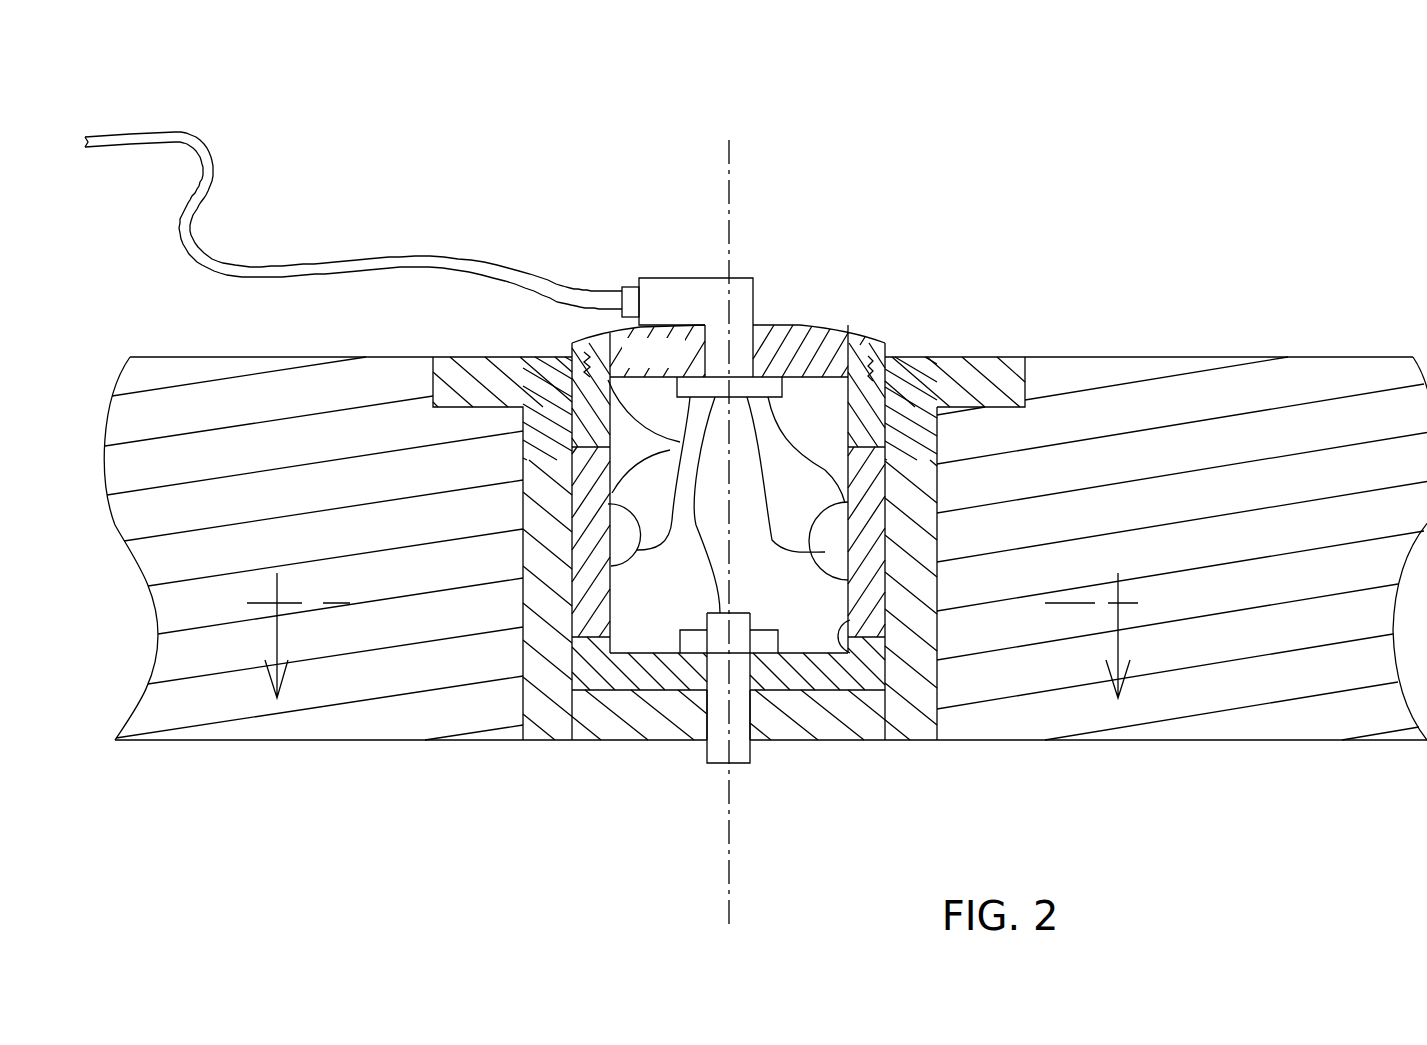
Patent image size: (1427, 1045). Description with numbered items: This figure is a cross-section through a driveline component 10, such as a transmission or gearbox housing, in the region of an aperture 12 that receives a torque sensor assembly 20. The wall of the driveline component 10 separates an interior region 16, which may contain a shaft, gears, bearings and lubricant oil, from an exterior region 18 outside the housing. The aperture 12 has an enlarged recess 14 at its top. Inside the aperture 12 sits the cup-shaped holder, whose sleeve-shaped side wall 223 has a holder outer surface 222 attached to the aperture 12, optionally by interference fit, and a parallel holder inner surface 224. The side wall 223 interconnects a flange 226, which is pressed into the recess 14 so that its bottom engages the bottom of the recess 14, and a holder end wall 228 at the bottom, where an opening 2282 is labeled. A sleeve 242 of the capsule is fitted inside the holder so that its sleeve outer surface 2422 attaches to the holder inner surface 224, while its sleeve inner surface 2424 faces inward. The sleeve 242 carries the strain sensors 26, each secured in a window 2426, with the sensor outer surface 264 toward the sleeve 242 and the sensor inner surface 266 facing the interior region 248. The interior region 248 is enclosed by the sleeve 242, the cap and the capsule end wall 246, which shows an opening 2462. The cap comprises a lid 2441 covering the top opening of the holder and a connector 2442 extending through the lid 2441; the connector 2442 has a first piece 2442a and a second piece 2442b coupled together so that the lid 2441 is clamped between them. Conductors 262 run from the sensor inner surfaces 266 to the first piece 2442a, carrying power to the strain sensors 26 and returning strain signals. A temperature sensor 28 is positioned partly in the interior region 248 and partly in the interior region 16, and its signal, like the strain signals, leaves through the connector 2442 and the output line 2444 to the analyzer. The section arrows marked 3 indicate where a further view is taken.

The driveline component 10 is at (1355, 532).
The aperture 12 is at (1010, 362).
The recess 14 is at (993, 405).
The interior region 16 is at (1218, 869).
The exterior region 18 is at (1218, 254).
The torque sensor assembly 20 is at (674, 222).
The strain sensor 26 is at (865, 530).
The temperature sensor 28 is at (740, 763).
The holder outer surface 222 is at (520, 687).
The side wall 223 is at (548, 588).
The holder inner surface 224 is at (588, 495).
The flange 226 is at (993, 357).
The holder end wall 228 is at (558, 743).
The sleeve 242 is at (565, 375).
The capsule end wall 246 is at (668, 698).
The interior region 248 is at (627, 609).
The conductors 262 is at (615, 410).
The sensor outer surface 264 is at (567, 595).
The sensor inner surface 266 is at (845, 640).
The base through hole 2282 is at (718, 717).
The sleeve outer surface 2422 is at (575, 425).
The sleeve inner surface 2424 is at (605, 412).
The window 2426 is at (870, 455).
The lid 2441 is at (683, 366).
The connector 2442 is at (745, 265).
The first piece 2442a is at (740, 367).
The second piece 2442b is at (677, 278).
The output line 2444 is at (178, 133).
The bottom plate through hole 2462 is at (738, 667).
The section line 3- 3 is at (694, 635).